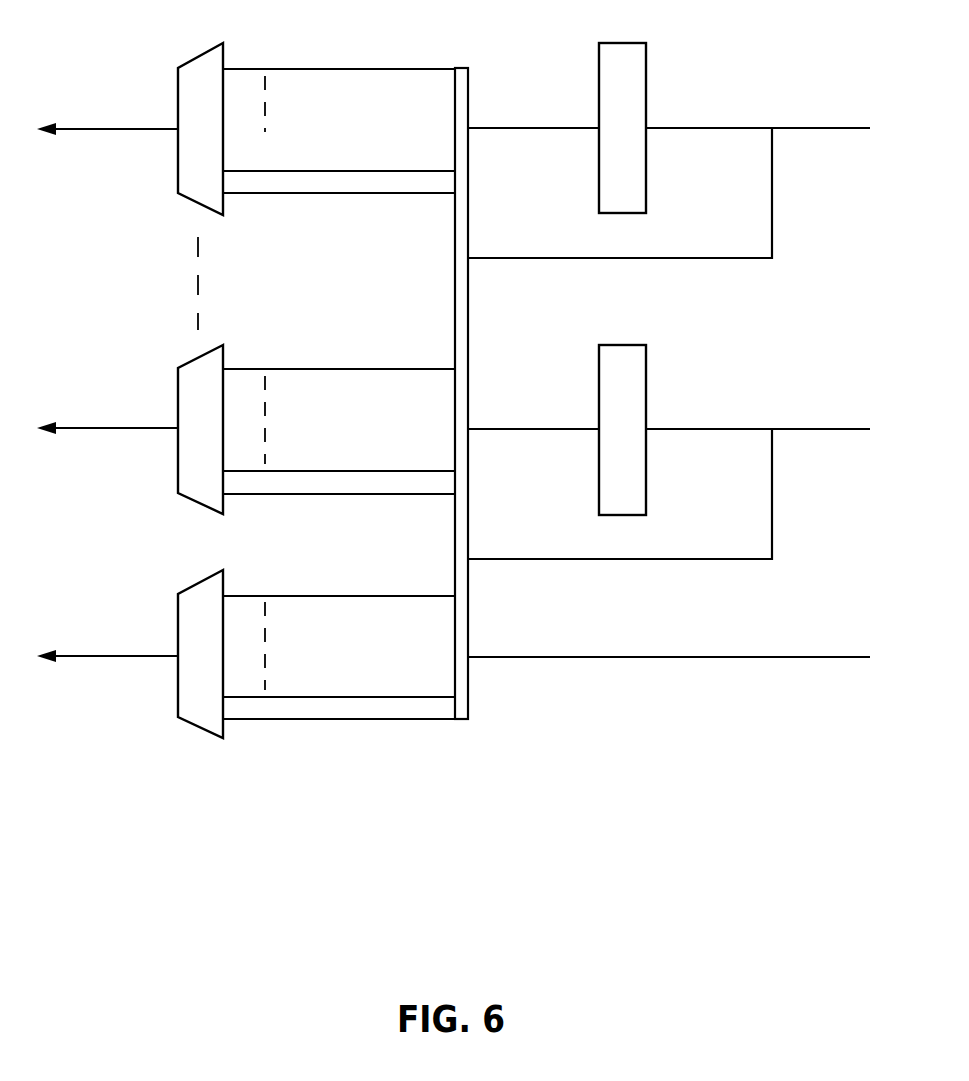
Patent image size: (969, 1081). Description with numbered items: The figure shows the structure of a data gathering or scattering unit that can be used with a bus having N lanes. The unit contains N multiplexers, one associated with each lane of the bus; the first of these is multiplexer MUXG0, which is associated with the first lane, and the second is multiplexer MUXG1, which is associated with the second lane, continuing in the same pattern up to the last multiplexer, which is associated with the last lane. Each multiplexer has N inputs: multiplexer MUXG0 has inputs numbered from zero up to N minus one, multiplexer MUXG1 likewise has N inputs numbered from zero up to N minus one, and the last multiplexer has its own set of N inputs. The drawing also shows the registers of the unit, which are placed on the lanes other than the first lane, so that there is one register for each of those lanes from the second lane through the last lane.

The multiplexer MUXG1 is at (193, 502).
The multiplexer MUXG0 is at (190, 727).